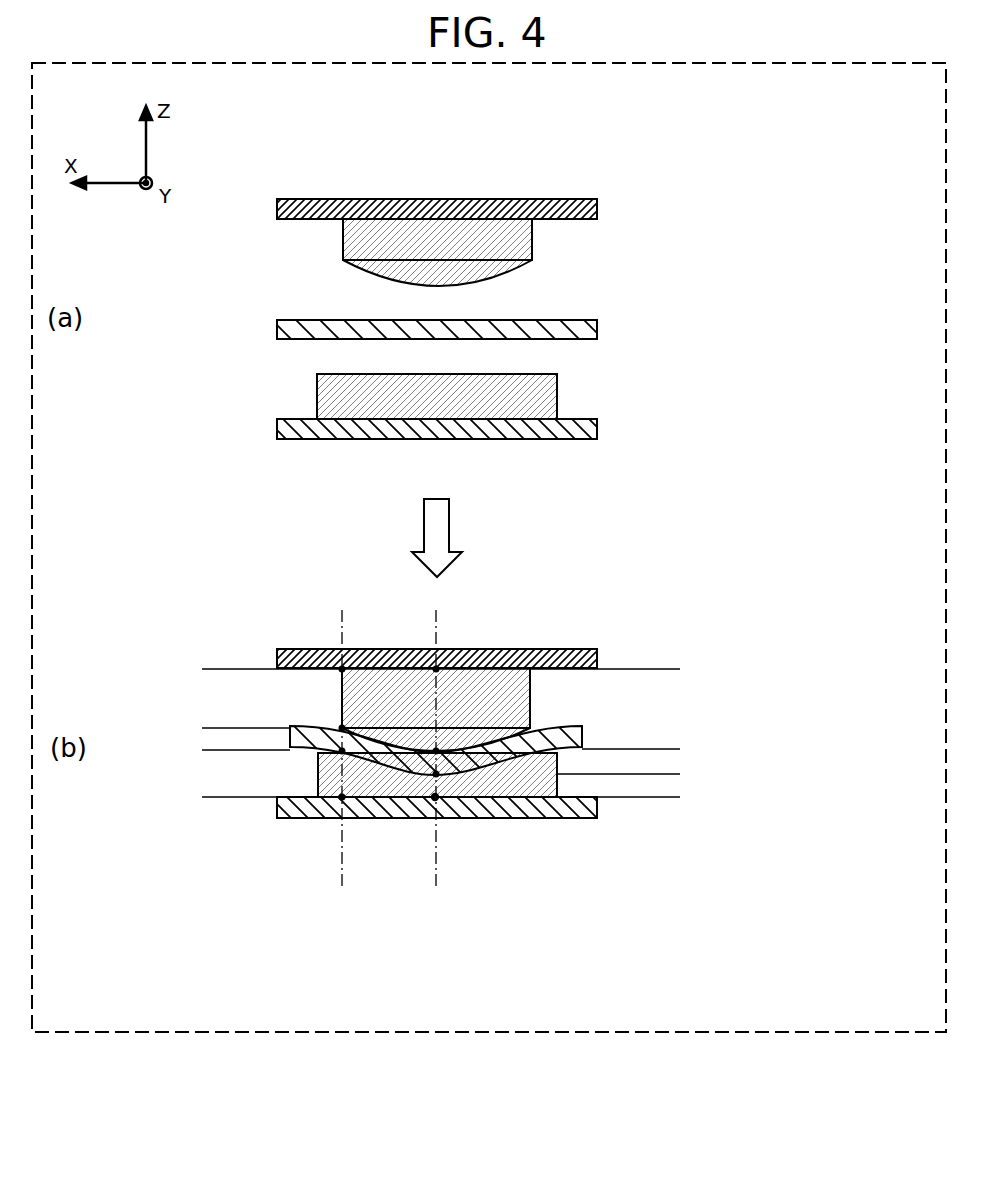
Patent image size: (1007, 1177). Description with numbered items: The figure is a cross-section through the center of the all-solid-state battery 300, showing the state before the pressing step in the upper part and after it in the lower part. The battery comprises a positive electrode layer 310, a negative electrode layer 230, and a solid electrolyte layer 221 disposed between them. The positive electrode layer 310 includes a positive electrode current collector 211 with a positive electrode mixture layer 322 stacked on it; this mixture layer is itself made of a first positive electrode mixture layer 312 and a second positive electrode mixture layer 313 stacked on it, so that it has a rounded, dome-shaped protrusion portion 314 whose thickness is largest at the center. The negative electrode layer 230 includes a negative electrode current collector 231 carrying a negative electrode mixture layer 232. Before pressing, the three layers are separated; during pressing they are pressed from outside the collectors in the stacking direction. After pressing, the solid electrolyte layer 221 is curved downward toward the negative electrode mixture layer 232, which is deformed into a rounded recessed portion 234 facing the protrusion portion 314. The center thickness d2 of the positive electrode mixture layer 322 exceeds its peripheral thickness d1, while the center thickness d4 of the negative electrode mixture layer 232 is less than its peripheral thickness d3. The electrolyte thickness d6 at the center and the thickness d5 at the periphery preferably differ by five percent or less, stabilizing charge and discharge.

The positive electrode current collector 211 is at (582, 209).
The first positive electrode mixture layer 312 is at (505, 238).
The second positive electrode mixture layer 313 is at (467, 273).
The positive electrode mixture layer 322 is at (763, 190).
The positive electrode layer 310 is at (840, 130).
The solid electrolyte layer 221 is at (560, 328).
The negative electrode mixture layer 232 is at (503, 397).
The negative electrode current collector 231 is at (543, 428).
The negative electrode layer 230 is at (763, 333).
The all-solid-state battery 300 is at (228, 617).
The protrusion portion 314 is at (435, 750).
The recessed portion 234 is at (435, 797).
The thickness of outer peripheral portion of positive electrode mixture layer d1 is at (247, 669).
The thickness of center portion of positive electrode mixture layer d2 is at (635, 669).
The thickness of negative electrode mixture layer facing outer peripheral portion d3 is at (247, 751).
The thickness of center portion of negative electrode mixture layer d4 is at (633, 788).
The thickness of solid electrolyte layer facing outer peripheral portion d5 is at (247, 751).
The thickness of solid electrolyte layer facing center portion d6 is at (635, 774).